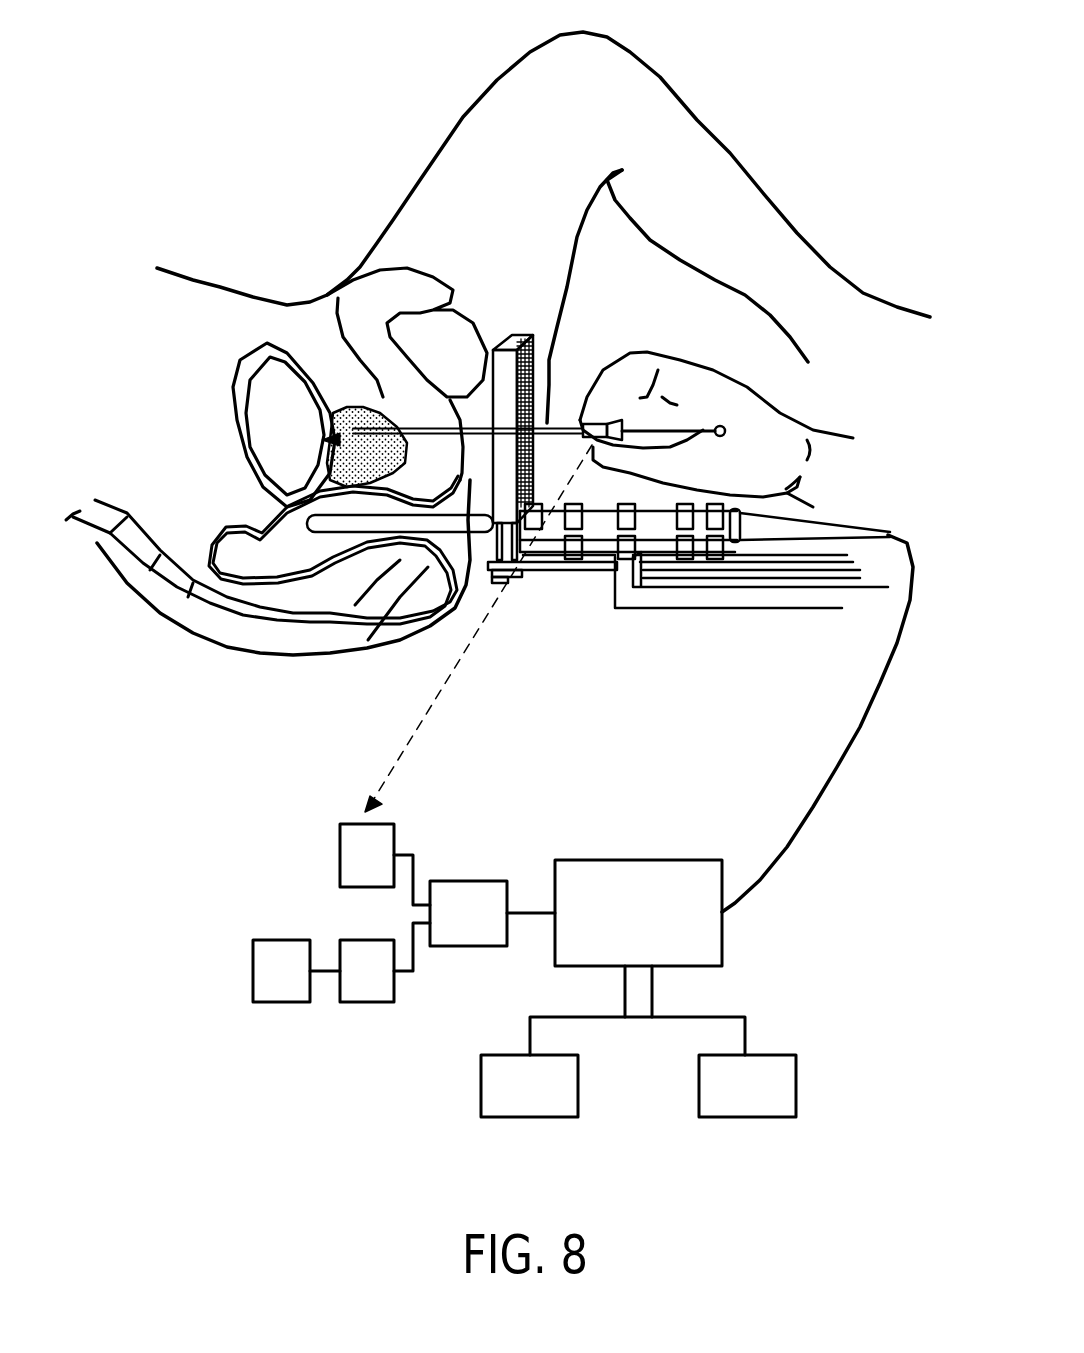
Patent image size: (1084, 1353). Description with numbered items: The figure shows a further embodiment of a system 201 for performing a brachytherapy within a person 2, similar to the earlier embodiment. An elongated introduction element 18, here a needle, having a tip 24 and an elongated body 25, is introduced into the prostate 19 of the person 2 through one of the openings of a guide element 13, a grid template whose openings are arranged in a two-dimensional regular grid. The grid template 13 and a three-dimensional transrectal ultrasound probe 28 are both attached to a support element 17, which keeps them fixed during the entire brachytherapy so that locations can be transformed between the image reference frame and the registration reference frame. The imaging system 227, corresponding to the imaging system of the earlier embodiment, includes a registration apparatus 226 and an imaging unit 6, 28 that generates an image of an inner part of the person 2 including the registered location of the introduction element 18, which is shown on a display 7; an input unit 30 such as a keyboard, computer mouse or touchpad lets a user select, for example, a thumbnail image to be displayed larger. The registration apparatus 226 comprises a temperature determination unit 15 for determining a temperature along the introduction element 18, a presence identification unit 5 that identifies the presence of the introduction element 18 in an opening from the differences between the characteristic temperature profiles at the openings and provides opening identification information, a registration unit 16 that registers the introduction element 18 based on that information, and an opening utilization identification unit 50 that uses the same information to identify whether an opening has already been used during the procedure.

The person 2 is at (127, 593).
The presence identification unit 5 is at (367, 1002).
The imaging unit 6 is at (685, 860).
The display 7 is at (796, 1090).
The guide element 13 is at (523, 505).
The temperature determination unit 15 is at (340, 855).
The registration unit 16 is at (470, 946).
The support element 17 is at (702, 610).
The introduction element 18 is at (647, 238).
The prostate 19 is at (351, 337).
The tip 24 is at (240, 455).
The elongated body 25 is at (468, 280).
The three-dimensional transrectal ultrasound probe 28 is at (400, 630).
The input unit 30 is at (481, 1090).
The opening utilization identification unit 50 is at (282, 1002).
The system 201 is at (248, 1125).
The registration apparatus 226 is at (326, 807).
The patient 227 is at (855, 858).